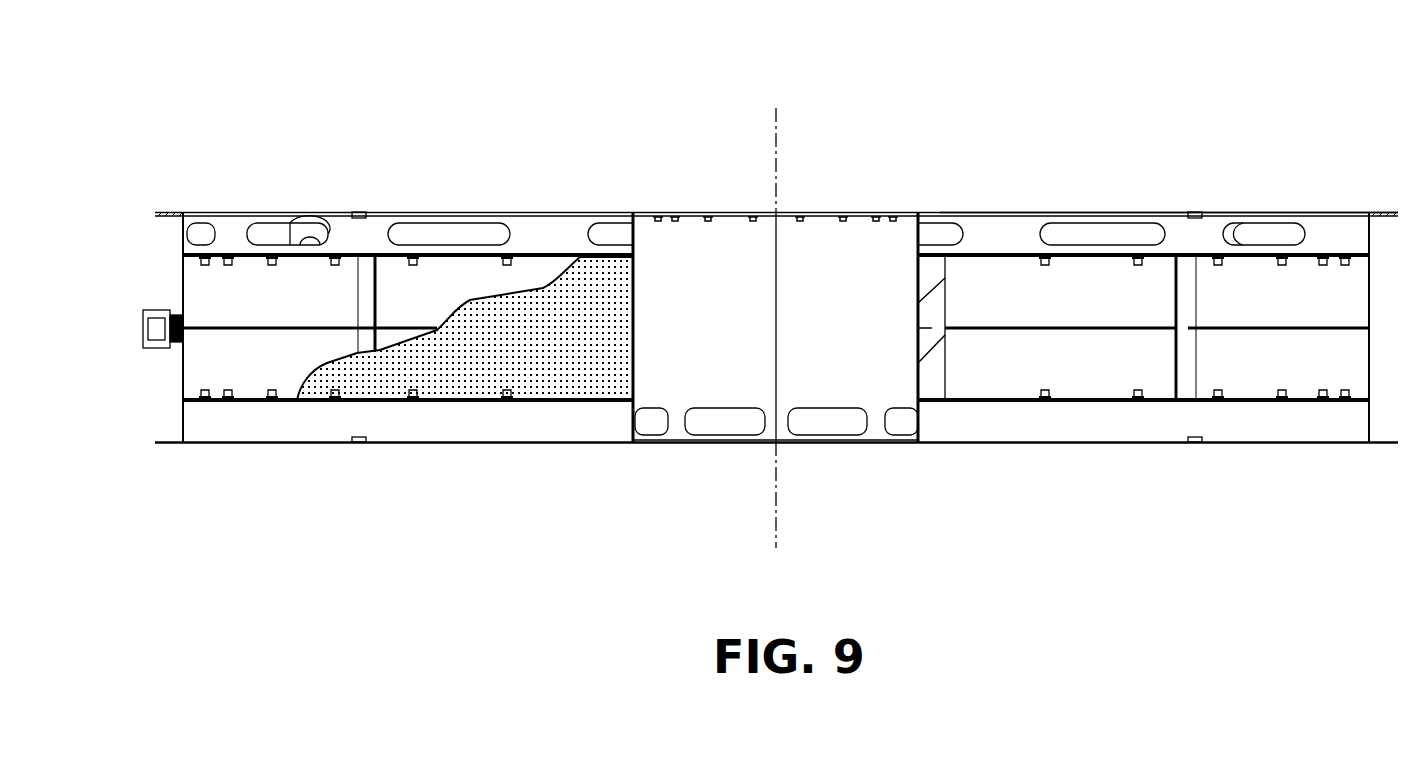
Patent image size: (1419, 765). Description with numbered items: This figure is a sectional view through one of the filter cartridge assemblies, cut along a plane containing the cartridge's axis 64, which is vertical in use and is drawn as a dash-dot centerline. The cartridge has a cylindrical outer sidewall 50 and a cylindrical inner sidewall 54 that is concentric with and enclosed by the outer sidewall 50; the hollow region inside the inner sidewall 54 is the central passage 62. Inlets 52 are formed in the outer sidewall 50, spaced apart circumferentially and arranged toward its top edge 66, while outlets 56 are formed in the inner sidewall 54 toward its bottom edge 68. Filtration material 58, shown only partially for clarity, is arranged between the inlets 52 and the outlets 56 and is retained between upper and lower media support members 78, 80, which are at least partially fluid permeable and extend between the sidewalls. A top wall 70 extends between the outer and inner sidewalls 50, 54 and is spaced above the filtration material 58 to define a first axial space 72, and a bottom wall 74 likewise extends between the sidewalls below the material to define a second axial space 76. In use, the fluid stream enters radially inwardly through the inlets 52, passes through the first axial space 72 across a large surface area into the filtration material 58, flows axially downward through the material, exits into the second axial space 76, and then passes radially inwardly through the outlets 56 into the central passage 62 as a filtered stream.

The outer sidewall 50 is at (183, 270).
The inlets 52 is at (273, 230).
The inner sidewall 54 is at (917, 270).
The outlets 56 is at (897, 428).
The filtration material 58 is at (484, 356).
The central passage 62 is at (700, 245).
The axis 64 is at (776, 130).
The top edge 66 is at (384, 212).
The bottom edge 68 is at (685, 443).
The top wall 70 is at (1028, 212).
The first axial space 72 is at (558, 232).
The bottom wall 74 is at (1033, 443).
The second axial space 76 is at (548, 420).
The upper media support member 78 is at (980, 252).
The lower media support member 80 is at (985, 403).